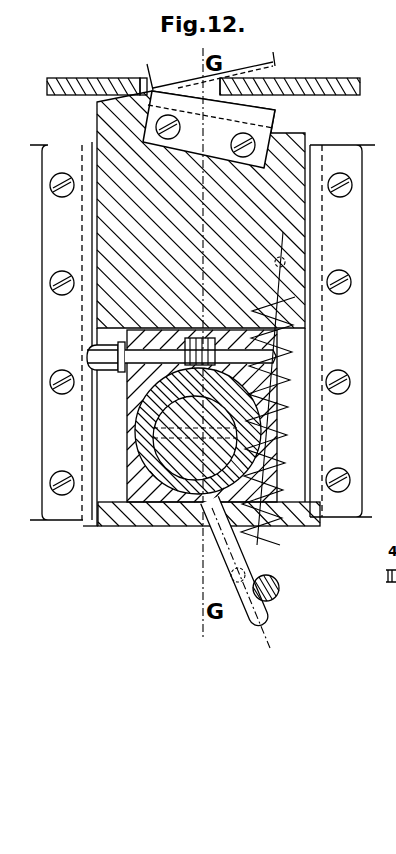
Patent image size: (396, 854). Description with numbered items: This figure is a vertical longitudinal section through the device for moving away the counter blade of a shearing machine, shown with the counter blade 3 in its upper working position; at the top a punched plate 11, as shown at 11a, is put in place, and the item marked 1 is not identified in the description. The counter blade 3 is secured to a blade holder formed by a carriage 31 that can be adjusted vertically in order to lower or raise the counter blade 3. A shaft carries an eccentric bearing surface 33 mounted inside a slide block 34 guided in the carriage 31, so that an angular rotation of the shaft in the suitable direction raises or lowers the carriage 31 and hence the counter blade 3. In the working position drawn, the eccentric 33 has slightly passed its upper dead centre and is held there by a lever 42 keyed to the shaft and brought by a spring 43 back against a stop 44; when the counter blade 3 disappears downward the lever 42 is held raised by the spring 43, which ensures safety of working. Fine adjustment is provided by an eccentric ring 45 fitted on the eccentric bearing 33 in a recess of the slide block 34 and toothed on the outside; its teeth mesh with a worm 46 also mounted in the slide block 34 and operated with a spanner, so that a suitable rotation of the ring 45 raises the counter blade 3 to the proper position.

The strip 1 is at (211, 71).
The counter blade 3 is at (209, 129).
The punched plate 11 is at (326, 82).
The punched plate 11a is at (220, 81).
The carriage 31 is at (130, 232).
The eccentric bearing surface 33 is at (147, 467).
The slide block 34 is at (142, 496).
The lever 42 is at (250, 621).
The spring 43 is at (283, 413).
The stop 44 is at (279, 596).
The eccentric ring 45 is at (135, 414).
The worm 46 is at (142, 365).